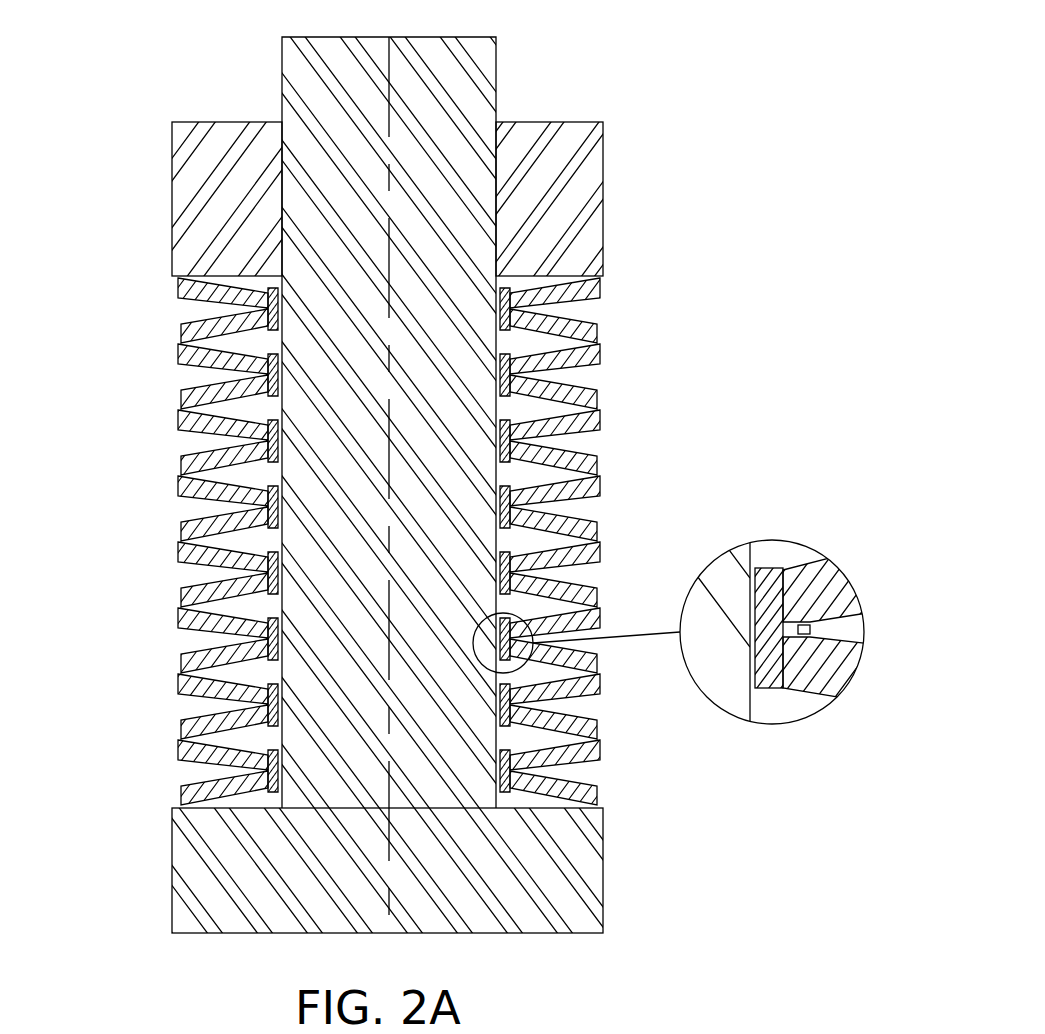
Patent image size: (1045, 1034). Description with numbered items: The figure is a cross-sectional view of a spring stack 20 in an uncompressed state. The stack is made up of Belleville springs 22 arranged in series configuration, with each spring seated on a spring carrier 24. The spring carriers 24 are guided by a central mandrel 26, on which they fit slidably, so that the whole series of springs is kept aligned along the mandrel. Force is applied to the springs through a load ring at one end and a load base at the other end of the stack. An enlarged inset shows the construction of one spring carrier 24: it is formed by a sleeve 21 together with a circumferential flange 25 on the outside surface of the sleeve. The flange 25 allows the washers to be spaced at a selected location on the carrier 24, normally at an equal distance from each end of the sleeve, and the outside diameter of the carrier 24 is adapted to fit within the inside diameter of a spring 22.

The spring stack 20 is at (522, 472).
The sleeve 21 is at (767, 568).
The springs 22 is at (187, 398).
The spring carriers 24 is at (512, 318).
The circumferential flange 25 is at (810, 628).
The mandrel 26 is at (338, 58).